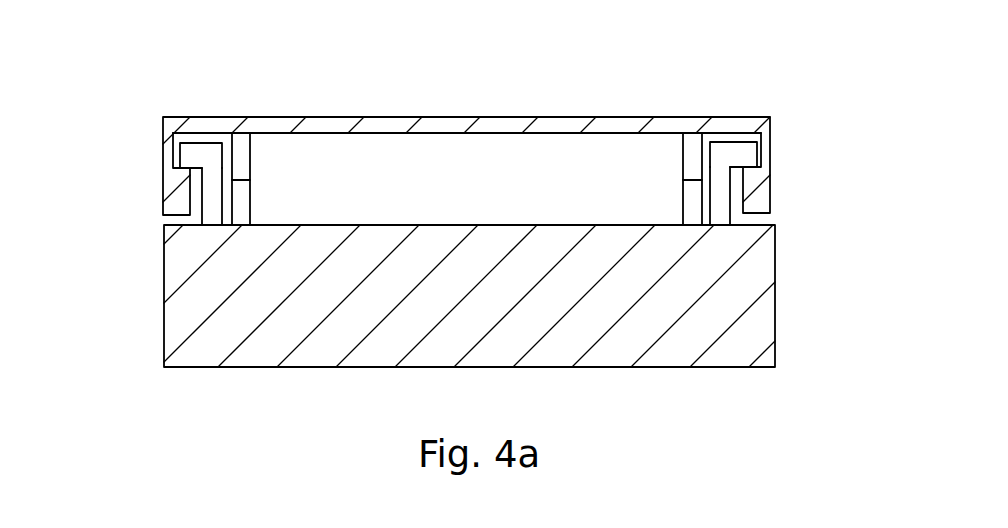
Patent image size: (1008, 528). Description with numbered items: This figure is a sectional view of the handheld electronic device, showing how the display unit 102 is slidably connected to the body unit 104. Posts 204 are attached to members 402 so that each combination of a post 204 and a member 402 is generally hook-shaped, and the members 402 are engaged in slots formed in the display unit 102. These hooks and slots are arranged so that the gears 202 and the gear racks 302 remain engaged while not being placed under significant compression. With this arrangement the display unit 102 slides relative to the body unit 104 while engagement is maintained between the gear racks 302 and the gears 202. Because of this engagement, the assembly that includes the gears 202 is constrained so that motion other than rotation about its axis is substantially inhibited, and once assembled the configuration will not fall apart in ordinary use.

The display unit 102 is at (192, 126).
The body unit 104 is at (183, 314).
The gear 202 is at (238, 198).
The post 204 is at (212, 207).
The gear rack 302 is at (242, 145).
The member 402 is at (188, 158).